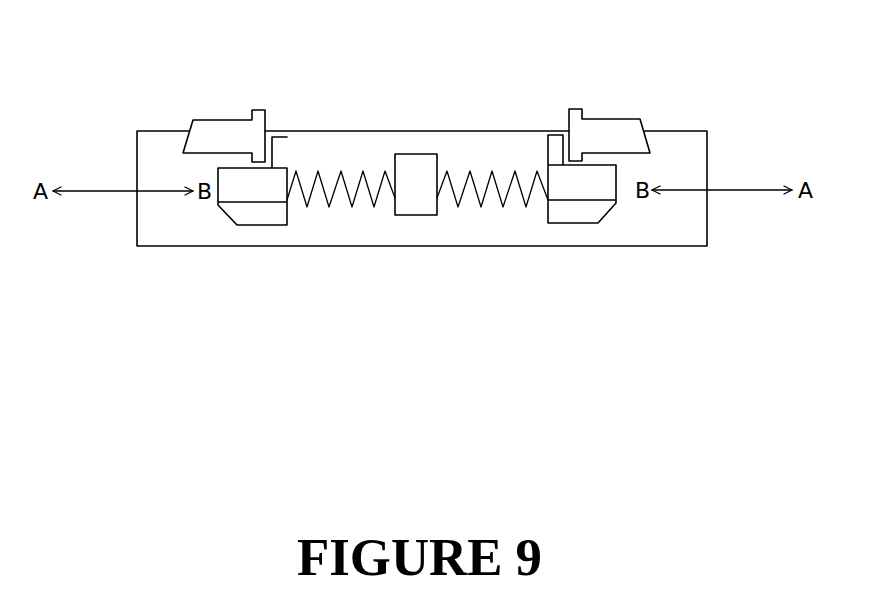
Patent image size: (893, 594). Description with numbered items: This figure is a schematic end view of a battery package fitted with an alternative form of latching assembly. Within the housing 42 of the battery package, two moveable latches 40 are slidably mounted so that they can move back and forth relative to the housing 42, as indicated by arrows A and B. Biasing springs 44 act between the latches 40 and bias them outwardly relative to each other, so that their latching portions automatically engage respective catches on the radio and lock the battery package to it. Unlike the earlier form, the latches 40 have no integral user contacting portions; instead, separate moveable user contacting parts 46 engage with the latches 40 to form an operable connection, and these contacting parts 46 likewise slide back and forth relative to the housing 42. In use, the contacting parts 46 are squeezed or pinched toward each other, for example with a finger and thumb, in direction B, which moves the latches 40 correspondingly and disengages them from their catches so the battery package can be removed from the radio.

The moveable latches 40 is at (275, 205).
The housing 42 is at (715, 118).
The biasing springs 44 is at (360, 172).
The moveable user contacting parts 46 is at (232, 125).